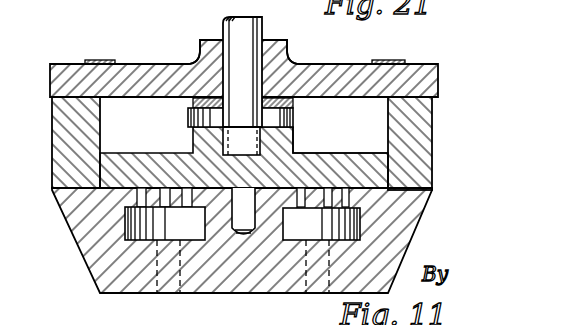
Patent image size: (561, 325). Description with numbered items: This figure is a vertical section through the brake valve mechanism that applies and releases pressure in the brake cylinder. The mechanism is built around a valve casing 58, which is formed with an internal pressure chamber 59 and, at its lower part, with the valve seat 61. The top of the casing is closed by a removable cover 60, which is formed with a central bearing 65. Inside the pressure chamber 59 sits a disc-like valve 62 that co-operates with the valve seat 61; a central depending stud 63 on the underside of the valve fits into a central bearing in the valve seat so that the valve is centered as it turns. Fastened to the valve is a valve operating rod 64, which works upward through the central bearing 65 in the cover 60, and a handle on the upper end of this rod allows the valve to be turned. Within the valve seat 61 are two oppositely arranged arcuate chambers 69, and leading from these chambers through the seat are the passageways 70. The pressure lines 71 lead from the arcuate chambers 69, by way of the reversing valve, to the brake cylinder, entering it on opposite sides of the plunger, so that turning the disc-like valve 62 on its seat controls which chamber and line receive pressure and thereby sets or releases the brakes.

The valve casing 58 is at (433, 154).
The internal pressure chamber 59 is at (140, 113).
The removable cover 60 is at (431, 65).
The valve seat 61 is at (422, 209).
The disc-like valve 62 is at (350, 157).
The central depending stud 63 is at (230, 204).
The valve operating rod 64 is at (263, 36).
The central bearing 65 is at (275, 58).
The arcuate chambers 69 is at (128, 222).
The passageways 70 is at (137, 198).
The pressure lines 71 is at (161, 294).